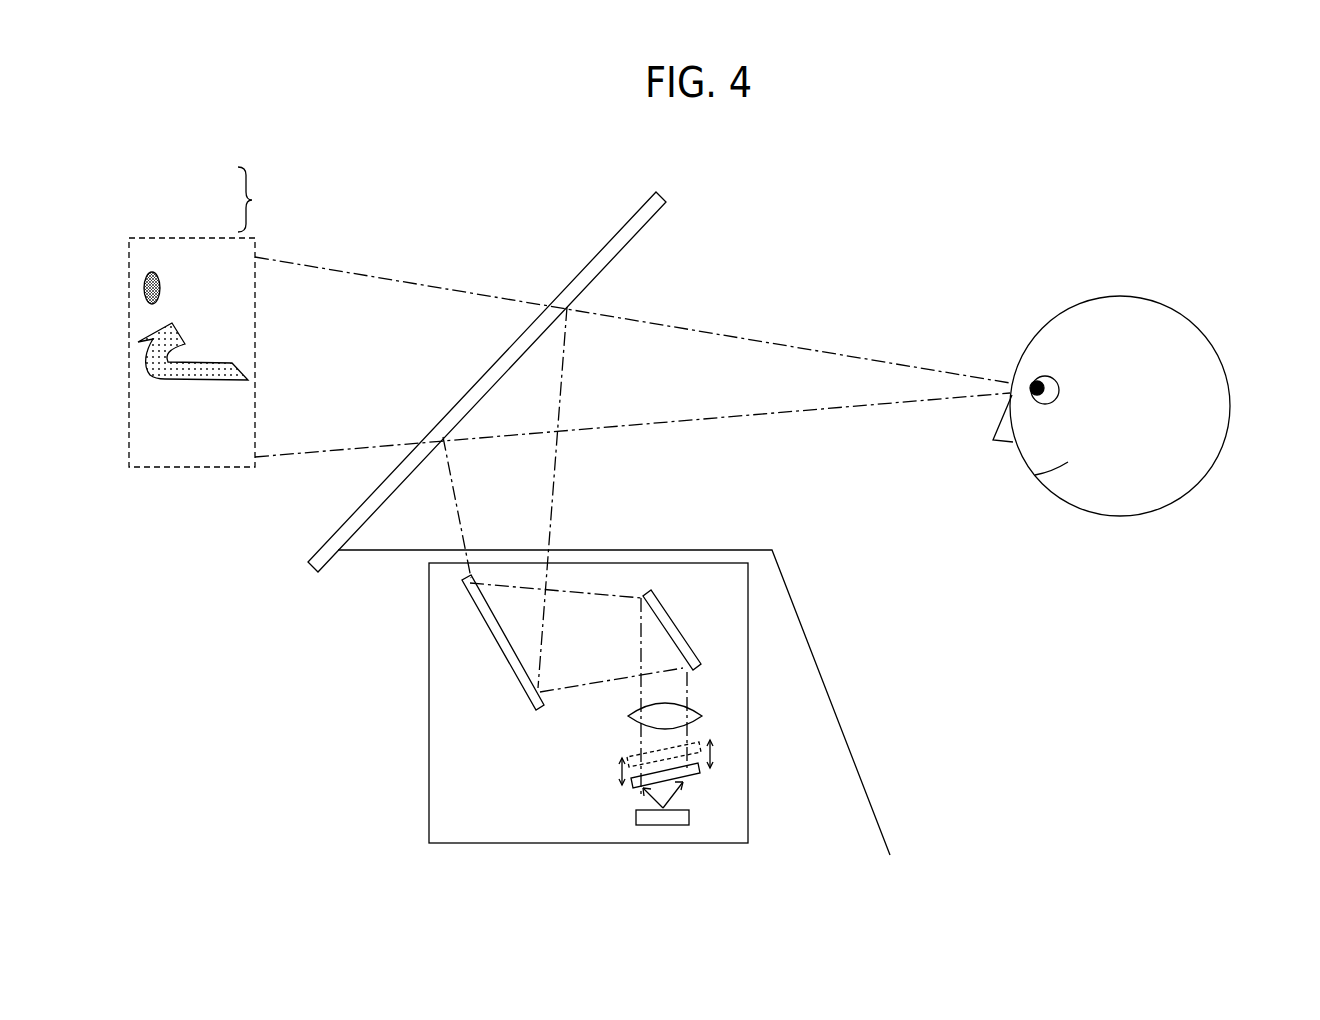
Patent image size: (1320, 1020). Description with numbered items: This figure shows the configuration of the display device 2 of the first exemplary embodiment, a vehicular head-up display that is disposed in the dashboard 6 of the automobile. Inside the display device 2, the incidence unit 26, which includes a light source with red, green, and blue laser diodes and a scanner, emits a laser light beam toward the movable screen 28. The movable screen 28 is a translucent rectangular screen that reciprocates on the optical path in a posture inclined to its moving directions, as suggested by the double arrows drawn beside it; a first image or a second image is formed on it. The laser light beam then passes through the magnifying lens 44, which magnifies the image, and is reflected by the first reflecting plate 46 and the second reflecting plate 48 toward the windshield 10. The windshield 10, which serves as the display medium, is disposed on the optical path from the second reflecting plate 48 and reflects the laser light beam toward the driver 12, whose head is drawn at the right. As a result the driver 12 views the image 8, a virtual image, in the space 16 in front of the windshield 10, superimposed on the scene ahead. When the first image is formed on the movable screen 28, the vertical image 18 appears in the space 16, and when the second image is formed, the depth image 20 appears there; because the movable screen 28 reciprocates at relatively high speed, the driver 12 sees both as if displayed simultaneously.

The display device 2 is at (424, 794).
The dashboard 6 is at (802, 627).
The image 8 is at (254, 199).
The windshield 10 is at (628, 215).
The driver 12 is at (1228, 405).
The space 16 is at (309, 358).
The vertical image 18 is at (160, 284).
The depth image 20 is at (174, 323).
The incidence unit 26 is at (660, 827).
The movable screen 28 is at (700, 770).
The magnifying lens 44 is at (702, 716).
The first reflecting plate 46 is at (670, 615).
The second reflecting plate 48 is at (492, 640).